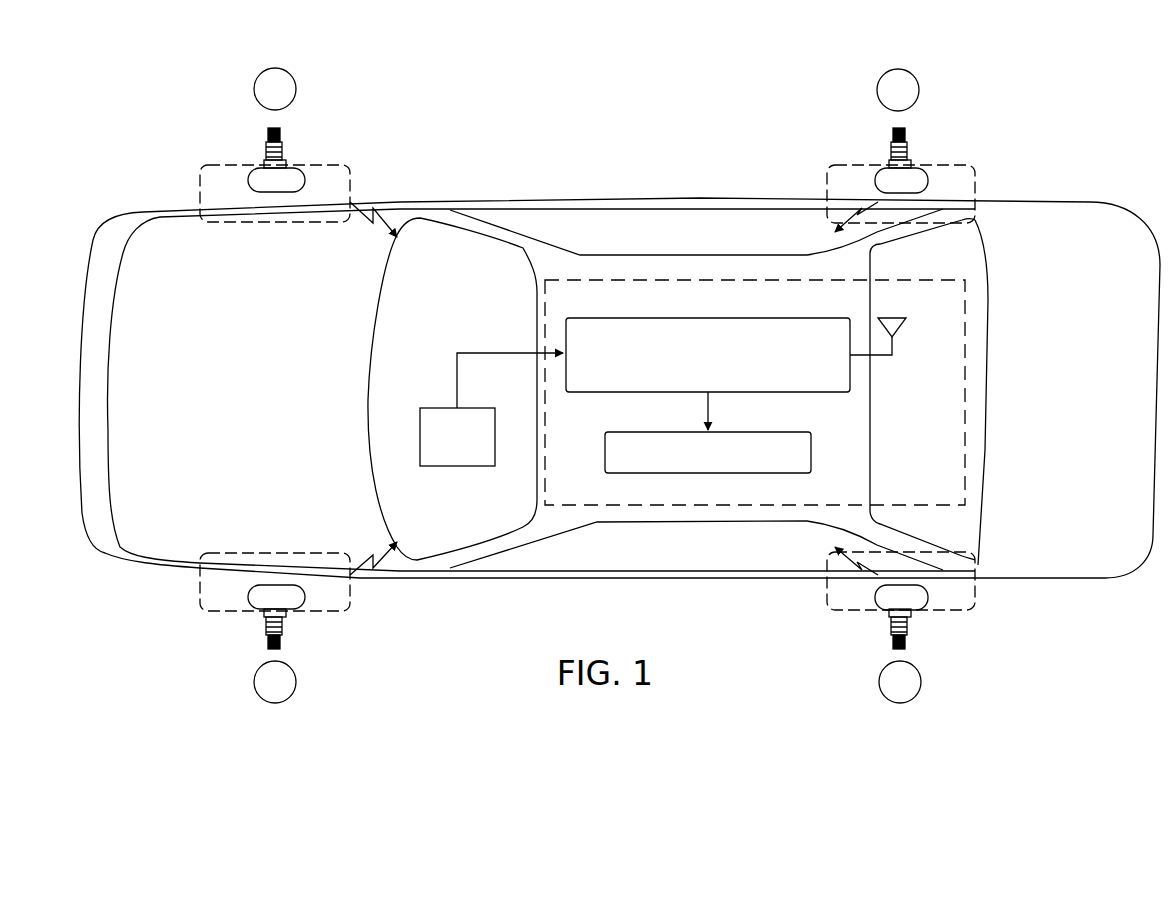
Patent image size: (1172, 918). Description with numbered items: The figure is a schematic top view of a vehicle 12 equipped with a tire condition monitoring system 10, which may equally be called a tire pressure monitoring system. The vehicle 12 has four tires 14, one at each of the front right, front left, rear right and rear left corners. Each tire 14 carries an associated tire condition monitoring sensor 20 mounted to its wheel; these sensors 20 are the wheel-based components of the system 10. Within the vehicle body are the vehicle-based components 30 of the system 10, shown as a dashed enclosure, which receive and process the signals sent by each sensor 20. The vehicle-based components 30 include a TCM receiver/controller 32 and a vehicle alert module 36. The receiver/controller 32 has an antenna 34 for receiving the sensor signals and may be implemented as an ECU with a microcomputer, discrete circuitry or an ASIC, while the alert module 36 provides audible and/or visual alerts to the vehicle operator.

The tire condition monitoring system 10 is at (1018, 100).
The vehicle 12 is at (1083, 210).
The tire 14 is at (353, 177).
The tire condition monitoring sensor 20 is at (293, 170).
The vehicle-based components 30 is at (775, 280).
The TCM receiver/controller 32 is at (852, 374).
The antenna 34 is at (897, 338).
The vehicle alert module 36 is at (812, 450).